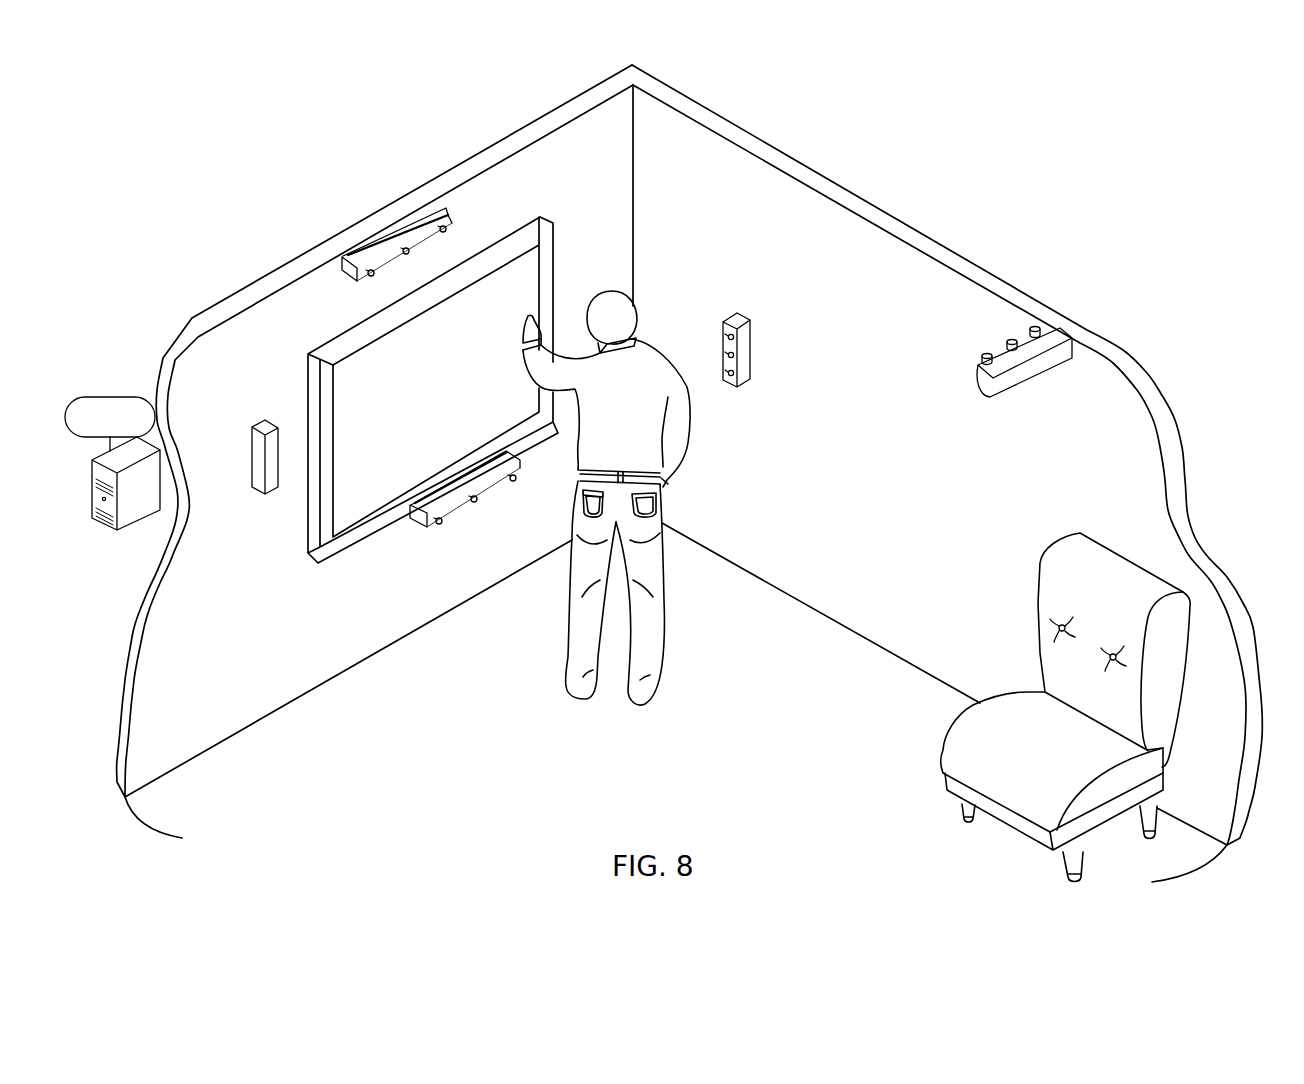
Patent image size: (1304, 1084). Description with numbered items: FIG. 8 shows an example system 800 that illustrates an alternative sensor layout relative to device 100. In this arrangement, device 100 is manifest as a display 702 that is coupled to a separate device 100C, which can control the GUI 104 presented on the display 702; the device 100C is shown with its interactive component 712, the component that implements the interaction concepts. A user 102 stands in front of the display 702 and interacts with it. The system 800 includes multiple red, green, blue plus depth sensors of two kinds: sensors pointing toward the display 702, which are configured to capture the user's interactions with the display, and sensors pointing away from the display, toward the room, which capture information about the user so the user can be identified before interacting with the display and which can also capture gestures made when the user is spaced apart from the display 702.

The system 800 is at (205, 95).
The device 100 is at (350, 326).
The display 702 is at (553, 243).
The GUI 104 is at (447, 436).
The user 102 is at (606, 435).
The device 100C is at (152, 513).
The interactive component 712 is at (141, 428).